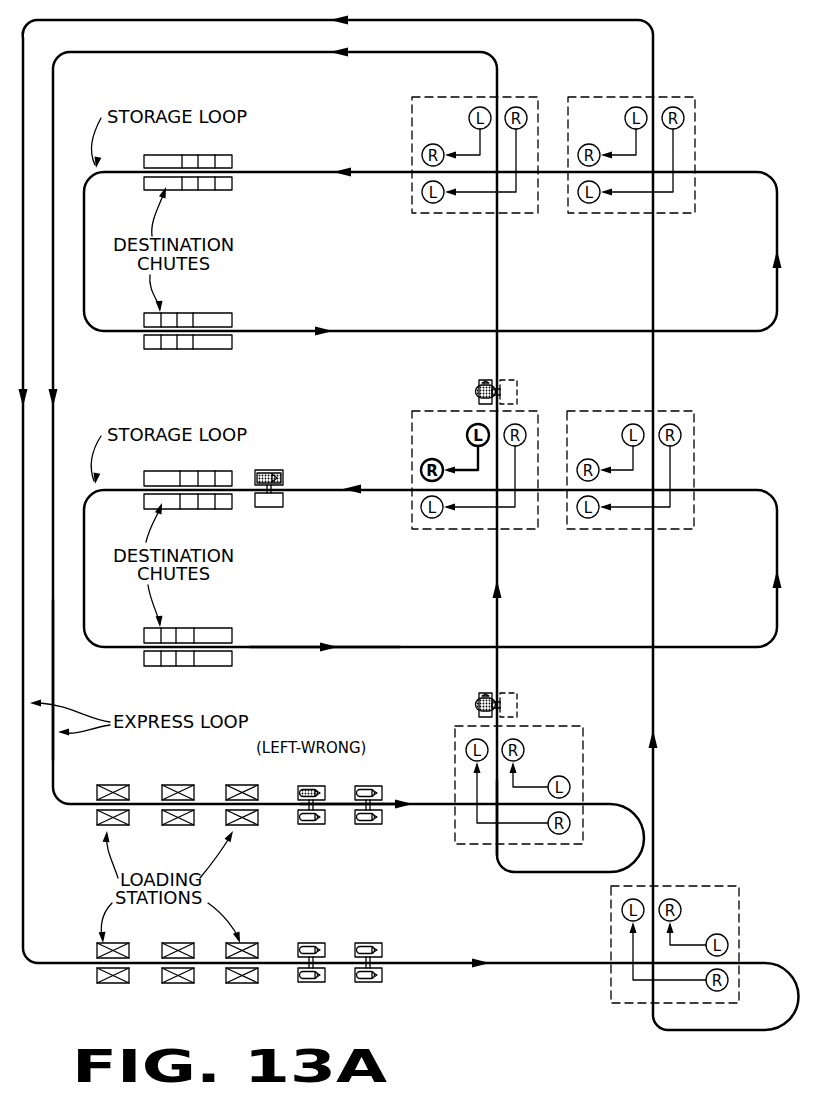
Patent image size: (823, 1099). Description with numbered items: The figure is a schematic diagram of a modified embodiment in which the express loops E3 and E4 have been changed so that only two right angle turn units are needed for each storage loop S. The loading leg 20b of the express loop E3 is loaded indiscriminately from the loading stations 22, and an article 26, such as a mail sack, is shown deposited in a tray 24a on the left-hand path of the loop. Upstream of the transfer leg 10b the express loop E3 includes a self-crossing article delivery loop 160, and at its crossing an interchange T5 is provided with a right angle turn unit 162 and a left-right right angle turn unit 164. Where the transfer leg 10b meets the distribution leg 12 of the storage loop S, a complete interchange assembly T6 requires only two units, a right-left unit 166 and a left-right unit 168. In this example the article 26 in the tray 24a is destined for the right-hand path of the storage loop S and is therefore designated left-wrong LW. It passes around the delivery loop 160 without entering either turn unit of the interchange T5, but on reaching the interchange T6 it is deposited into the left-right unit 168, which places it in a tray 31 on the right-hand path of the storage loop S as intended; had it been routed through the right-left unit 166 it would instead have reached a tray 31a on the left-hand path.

The transfer leg 10b is at (495, 660).
The distribution leg 12 is at (378, 488).
The loading leg 20b is at (392, 803).
The loading station 22 is at (236, 786).
The tray 24a is at (298, 791).
The article 26 is at (375, 786).
The tray 31 is at (282, 473).
The tray 31a is at (283, 503).
The self-crossing article delivery loop 160 is at (496, 858).
The right angle turn unit 162 is at (523, 786).
The left-right right angle turn unit 164 is at (520, 824).
The right-left right angle turn unit 166 is at (480, 509).
The left-right right angle turn unit 168 is at (467, 467).
The express loop E3 is at (64, 679).
The express loop E4 is at (48, 967).
The storage loop S is at (297, 641).
The interchange T5 is at (525, 768).
The interchange assembly T6 is at (436, 498).
The left-wrong designation LW is at (479, 376).